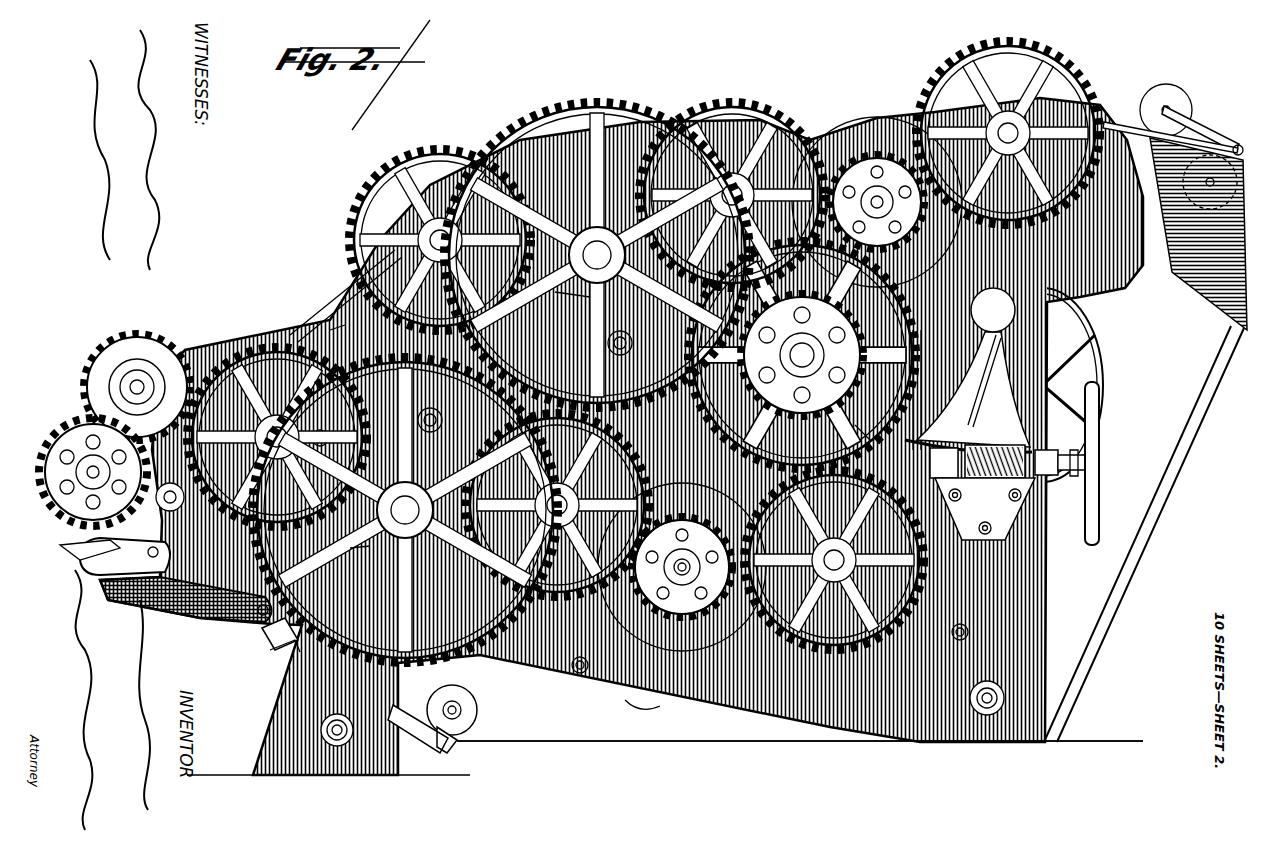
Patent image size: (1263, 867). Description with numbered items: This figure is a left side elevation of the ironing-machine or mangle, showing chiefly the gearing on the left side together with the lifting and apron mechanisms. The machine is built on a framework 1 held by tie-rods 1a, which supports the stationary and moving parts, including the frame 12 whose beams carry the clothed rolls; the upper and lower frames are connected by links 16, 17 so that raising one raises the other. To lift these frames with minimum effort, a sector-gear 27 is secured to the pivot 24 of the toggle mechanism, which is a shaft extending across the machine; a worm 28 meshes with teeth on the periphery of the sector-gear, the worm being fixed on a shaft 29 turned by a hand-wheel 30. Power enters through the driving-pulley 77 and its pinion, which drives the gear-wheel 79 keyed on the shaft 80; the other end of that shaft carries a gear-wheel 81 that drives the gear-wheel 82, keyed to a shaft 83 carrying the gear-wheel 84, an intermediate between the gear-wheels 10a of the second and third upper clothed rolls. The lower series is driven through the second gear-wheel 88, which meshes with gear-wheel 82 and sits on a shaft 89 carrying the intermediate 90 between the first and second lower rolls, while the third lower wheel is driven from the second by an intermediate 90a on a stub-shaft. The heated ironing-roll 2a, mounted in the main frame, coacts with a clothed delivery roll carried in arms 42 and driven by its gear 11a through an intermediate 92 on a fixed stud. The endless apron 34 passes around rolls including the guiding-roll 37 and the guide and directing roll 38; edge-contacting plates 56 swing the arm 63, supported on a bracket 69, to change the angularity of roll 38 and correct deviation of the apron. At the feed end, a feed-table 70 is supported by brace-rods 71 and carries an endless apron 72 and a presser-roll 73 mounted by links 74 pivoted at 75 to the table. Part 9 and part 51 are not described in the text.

The framework 1 is at (960, 598).
The tie-rods 1a is at (320, 728).
The heated ironing-roll 2a is at (138, 340).
The bar 9 is at (330, 318).
The gear-wheels 10a is at (440, 148).
The gear 11a is at (58, 418).
The frame 12 is at (585, 180).
The link 16 is at (345, 328).
The link 17 is at (847, 439).
The pivot 24 is at (993, 310).
The sector-gear 27 is at (968, 392).
The worm 28 is at (980, 480).
The shaft 29 is at (1068, 472).
The hand-wheel 30 is at (1100, 425).
The endless apron 34 is at (800, 754).
The guiding-roll 37 is at (636, 705).
The guide and directing roll 38 is at (468, 706).
The arms 42 is at (210, 618).
The pin 51 is at (968, 632).
The edge-contacting plates 56 is at (262, 636).
The arm 63 is at (290, 655).
The bracket 69 is at (458, 756).
The feed-table 70 is at (1198, 234).
The brace-rods 71 is at (1150, 514).
The endless apron 72 is at (1110, 120).
The presser-roll 73 is at (1170, 100).
The links 74 is at (1205, 130).
The pivot 75 is at (1239, 145).
The driving-pulley 77 is at (1098, 346).
The gear-wheel 79 is at (760, 420).
The shaft 80 is at (790, 352).
The gear-wheel 81 is at (814, 354).
The gear-wheel 82 is at (625, 218).
The shaft 83 is at (597, 252).
The gear-wheel 84 is at (556, 293).
The second gear-wheel 88 is at (438, 464).
The shaft 89 is at (405, 506).
The intermediate 90 is at (345, 549).
The intermediate 90a is at (690, 616).
The intermediate 92 is at (81, 545).